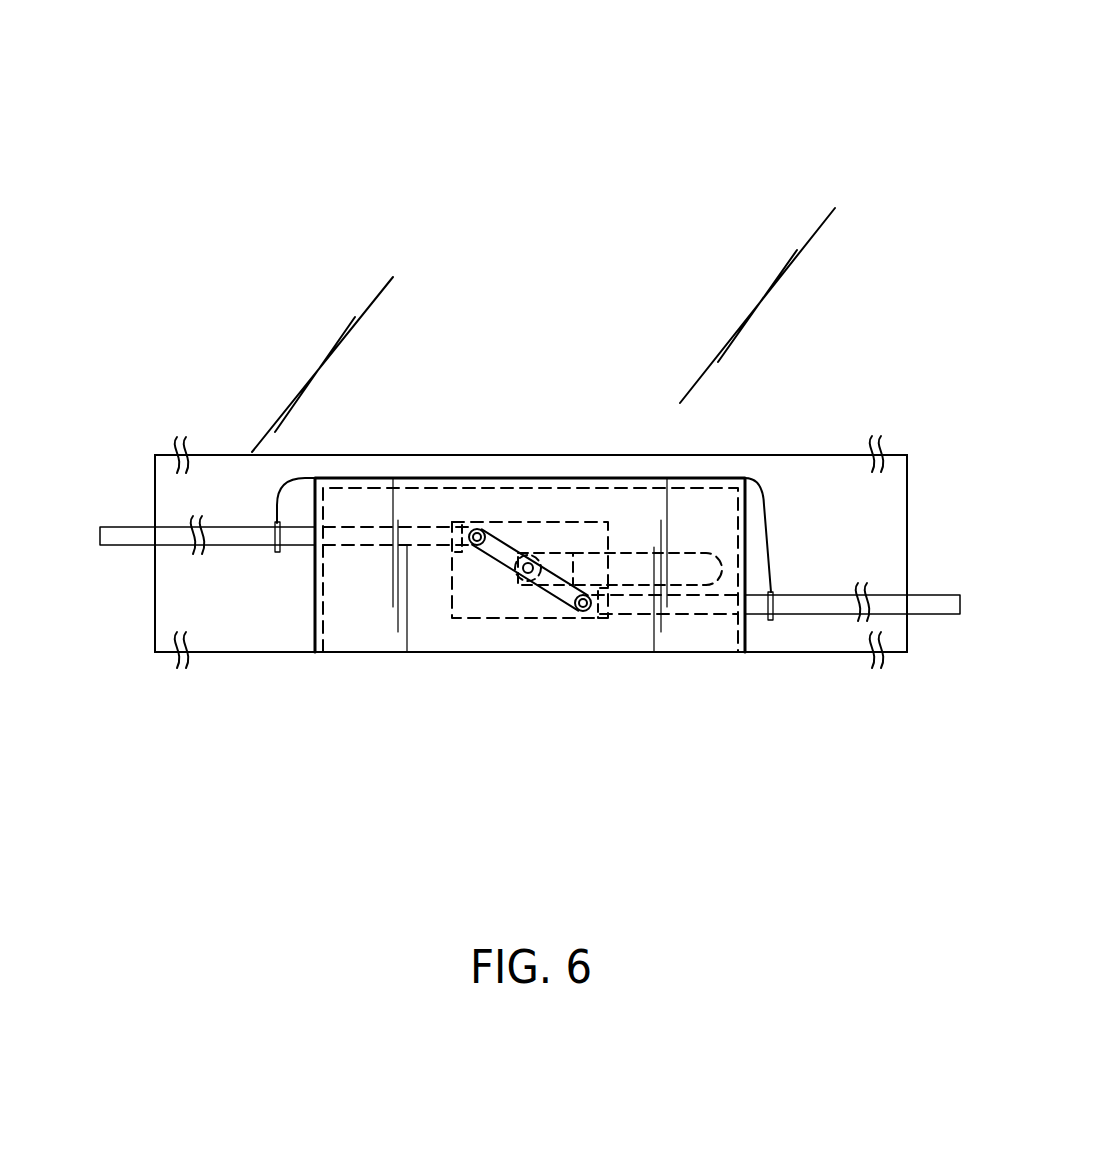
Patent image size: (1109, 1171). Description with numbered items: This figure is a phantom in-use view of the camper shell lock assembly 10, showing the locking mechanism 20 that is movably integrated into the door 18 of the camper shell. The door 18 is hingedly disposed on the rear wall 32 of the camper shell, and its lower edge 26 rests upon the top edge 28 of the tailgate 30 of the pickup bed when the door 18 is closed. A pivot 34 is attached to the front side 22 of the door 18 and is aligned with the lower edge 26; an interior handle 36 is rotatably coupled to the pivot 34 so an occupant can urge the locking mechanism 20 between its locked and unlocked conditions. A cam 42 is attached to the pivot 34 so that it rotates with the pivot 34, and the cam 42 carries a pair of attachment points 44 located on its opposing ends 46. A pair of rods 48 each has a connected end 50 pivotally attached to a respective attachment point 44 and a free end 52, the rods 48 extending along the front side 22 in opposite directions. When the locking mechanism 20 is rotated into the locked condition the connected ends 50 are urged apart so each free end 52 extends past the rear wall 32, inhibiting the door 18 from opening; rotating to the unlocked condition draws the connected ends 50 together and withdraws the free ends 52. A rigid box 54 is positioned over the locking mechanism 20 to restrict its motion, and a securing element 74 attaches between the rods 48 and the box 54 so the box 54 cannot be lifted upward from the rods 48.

The camper shell lock assembly 10 is at (555, 142).
The door 18 is at (835, 480).
The locking mechanism 20 is at (582, 513).
The front side 22 is at (227, 485).
The lower edge 26 is at (782, 652).
The top edge 28 is at (812, 652).
The tailgate 30 is at (290, 648).
The rear wall 32 is at (155, 490).
The pivot 34 is at (528, 581).
The interior handle 36 is at (680, 555).
The cam 42 is at (495, 562).
The attachment points 44 is at (482, 533).
The opposing ends 46 is at (470, 533).
The rods 48 is at (356, 545).
The connected end 50 is at (587, 600).
The free end 52 is at (100, 534).
The box 54 is at (707, 478).
The securing element 74 is at (287, 480).